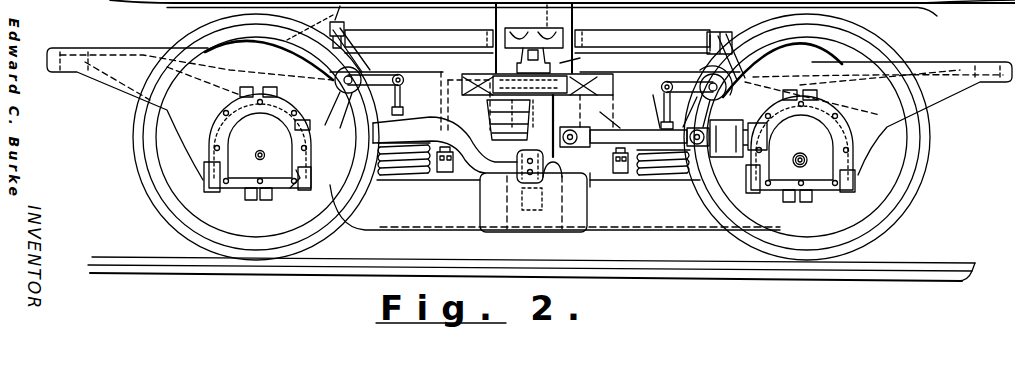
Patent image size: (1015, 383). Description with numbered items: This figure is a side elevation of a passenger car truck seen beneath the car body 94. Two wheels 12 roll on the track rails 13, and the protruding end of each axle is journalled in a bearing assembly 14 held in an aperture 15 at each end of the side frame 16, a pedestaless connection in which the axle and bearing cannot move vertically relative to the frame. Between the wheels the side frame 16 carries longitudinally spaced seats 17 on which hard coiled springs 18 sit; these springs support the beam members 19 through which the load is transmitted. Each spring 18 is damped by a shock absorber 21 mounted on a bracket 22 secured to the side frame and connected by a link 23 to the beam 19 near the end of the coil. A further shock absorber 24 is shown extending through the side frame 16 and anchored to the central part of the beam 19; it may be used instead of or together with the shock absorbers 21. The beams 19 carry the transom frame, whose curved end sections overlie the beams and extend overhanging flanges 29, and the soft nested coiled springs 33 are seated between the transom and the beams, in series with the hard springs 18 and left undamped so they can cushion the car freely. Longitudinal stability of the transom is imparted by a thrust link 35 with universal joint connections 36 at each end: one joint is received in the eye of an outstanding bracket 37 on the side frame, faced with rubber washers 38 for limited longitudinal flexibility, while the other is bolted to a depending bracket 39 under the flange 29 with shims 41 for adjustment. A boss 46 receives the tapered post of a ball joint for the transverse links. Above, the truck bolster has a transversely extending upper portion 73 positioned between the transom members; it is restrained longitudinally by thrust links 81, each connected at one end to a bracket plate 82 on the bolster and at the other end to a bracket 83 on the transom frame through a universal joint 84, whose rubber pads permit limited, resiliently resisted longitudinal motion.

The wheels 12 is at (139, 154).
The track rails 13 is at (114, 264).
The bearing assembly 14 is at (270, 180).
The apertures 15 is at (302, 191).
The side frames 16 is at (119, 49).
The seats 17 is at (427, 181).
The coiled springs 18 is at (388, 182).
The beam members 19 is at (422, 117).
The shock absorber 21 is at (363, 69).
The bracket 22 is at (314, 88).
The link 23 is at (398, 90).
The shock absorber 24 is at (497, 232).
The overhanging flanges 29 is at (488, 82).
The nested coiled springs 33 is at (484, 116).
The thrust links 35 is at (640, 124).
The universal joint connections 36 is at (663, 106).
The outstanding bracket 37 is at (736, 162).
The rubber washers 38 is at (766, 143).
The depending bracket 39 is at (516, 155).
The shims 41 is at (550, 180).
The boss 46 is at (450, 181).
The upper portion 73 is at (535, 91).
The thrust links 81 is at (422, 20).
The bracket plate 82 is at (532, 26).
The bracket 83 is at (343, 24).
The universal joint 84 is at (719, 30).
The car body 94 is at (937, 16).